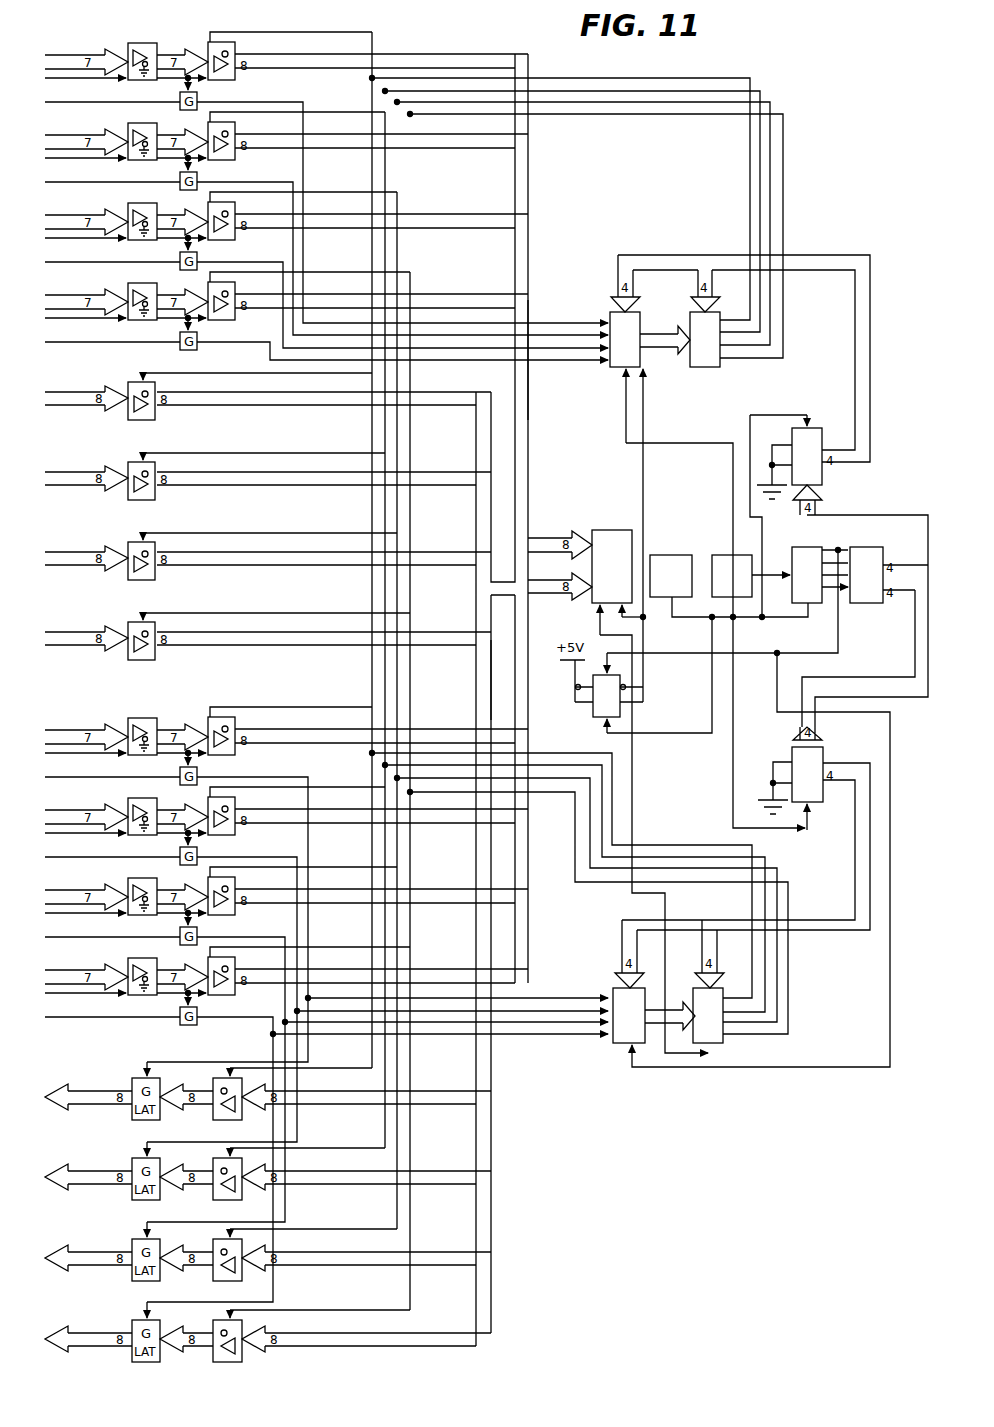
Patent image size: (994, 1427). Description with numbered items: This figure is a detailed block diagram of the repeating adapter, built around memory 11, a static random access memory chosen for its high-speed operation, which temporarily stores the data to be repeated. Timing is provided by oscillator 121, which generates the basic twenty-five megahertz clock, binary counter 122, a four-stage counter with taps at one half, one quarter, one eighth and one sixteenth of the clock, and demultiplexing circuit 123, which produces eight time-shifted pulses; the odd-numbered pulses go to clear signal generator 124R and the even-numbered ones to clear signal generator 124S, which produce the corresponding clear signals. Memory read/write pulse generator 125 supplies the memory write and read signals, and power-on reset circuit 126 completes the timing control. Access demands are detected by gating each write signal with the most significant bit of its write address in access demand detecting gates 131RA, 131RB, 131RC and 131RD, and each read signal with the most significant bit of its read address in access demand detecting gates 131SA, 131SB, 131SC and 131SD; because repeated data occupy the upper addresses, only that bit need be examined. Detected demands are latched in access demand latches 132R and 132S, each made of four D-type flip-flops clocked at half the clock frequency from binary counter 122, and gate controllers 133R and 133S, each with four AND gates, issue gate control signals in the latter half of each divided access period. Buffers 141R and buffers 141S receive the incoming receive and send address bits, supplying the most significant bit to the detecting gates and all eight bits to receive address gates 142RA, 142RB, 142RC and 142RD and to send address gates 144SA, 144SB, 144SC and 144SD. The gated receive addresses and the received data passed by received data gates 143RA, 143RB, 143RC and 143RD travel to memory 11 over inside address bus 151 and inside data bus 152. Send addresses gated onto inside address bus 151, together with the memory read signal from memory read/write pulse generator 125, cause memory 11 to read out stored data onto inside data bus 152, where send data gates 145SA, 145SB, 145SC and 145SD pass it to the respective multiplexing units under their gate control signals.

The memory 11 is at (612, 530).
The oscillator 121 is at (724, 555).
The binary counter 122 is at (815, 603).
The demultiplexing circuit 123 is at (865, 603).
The clear signal generator 124R is at (806, 428).
The clear signal generator 124S is at (812, 802).
The memory read/write pulse generator 125 is at (593, 710).
The power-on reset circuit 126 is at (672, 555).
The access demand detecting gate 131RA is at (199, 103).
The access demand detecting gate 131RB is at (199, 183).
The access demand detecting gate 131RC is at (199, 263).
The access demand detecting gate 131RD is at (199, 343).
The access demand detecting gate 131SA is at (199, 778).
The access demand detecting gate 131SB is at (199, 858).
The access demand detecting gate 131SC is at (199, 938).
The access demand detecting gate 131SD is at (199, 1016).
The access demand latch 132R is at (638, 312).
The access demand latch 132S is at (613, 1040).
The gate controller 133R is at (712, 367).
The gate controller 133S is at (718, 1043).
The buffer 141R is at (142, 43).
The buffer 141S is at (142, 718).
The receive address gate 142RA is at (237, 46).
The receive address gate 142RB is at (237, 126).
The receive address gate 142RC is at (237, 206).
The receive address gate 142RD is at (237, 286).
The received data gate 143RA is at (156, 392).
The received data gate 143RB is at (156, 472).
The received data gate 143RC is at (156, 552).
The received data gate 143RD is at (156, 632).
The send address gate 144SA is at (237, 721).
The send address gate 144SB is at (237, 801).
The send address gate 144SC is at (237, 881).
The send address gate 144SD is at (237, 961).
The send data gate 145SA is at (216, 1120).
The send data gate 145SB is at (216, 1200).
The send data gate 145SC is at (216, 1281).
The send data gate 145SD is at (240, 1332).
The inside address bus 151 is at (530, 420).
The inside data bus 152 is at (478, 686).